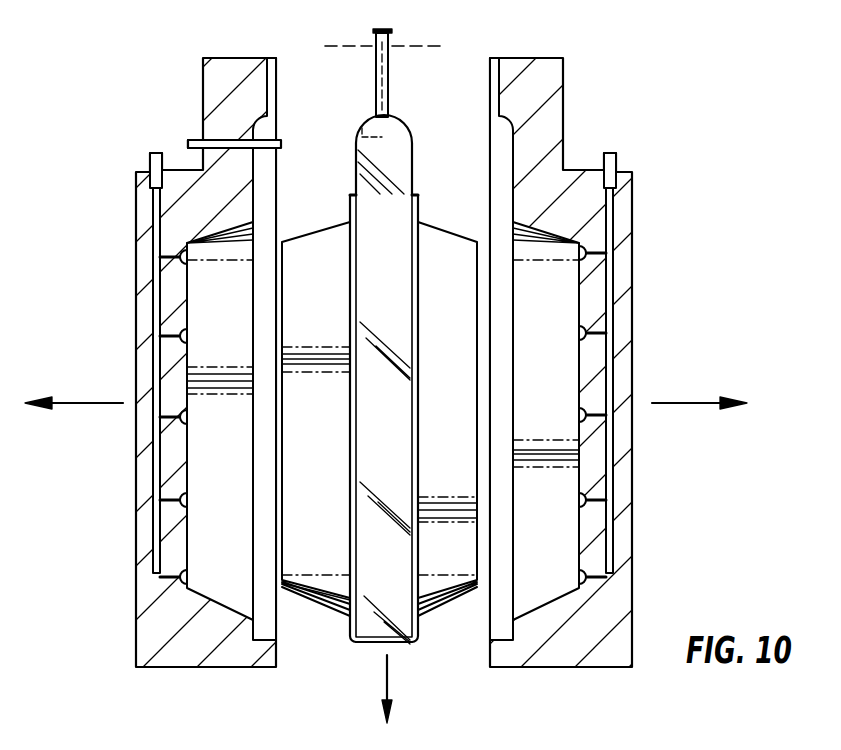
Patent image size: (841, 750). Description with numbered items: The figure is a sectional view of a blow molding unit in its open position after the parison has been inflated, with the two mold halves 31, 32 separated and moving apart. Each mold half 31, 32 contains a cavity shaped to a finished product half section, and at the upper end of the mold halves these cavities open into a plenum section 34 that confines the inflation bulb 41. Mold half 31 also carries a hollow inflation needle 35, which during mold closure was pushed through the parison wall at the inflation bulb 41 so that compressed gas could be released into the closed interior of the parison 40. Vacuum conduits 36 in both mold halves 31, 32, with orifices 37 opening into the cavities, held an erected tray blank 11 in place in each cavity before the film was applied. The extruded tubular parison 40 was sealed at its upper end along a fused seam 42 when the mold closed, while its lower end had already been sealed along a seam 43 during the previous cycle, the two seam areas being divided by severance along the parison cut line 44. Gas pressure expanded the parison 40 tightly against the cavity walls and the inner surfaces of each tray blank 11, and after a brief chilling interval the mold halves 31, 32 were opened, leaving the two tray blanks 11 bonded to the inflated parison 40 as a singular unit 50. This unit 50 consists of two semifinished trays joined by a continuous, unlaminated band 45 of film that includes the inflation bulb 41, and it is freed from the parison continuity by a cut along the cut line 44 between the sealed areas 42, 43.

The tray blank 11 is at (332, 460).
The mold half 31 is at (208, 650).
The mold half 32 is at (549, 650).
The plenum section 34 is at (273, 128).
The hollow inflation needle 35 is at (195, 141).
The vacuum conduit 36 is at (153, 498).
The orifice 37 is at (188, 500).
The parison 40 is at (393, 405).
The inflation bulb 41 is at (404, 163).
The fused seam 42 is at (392, 83).
The seam 43 is at (377, 36).
The parison cut line 44 is at (417, 47).
The unlaminated band 45 is at (386, 612).
The singular unit 50 is at (340, 622).